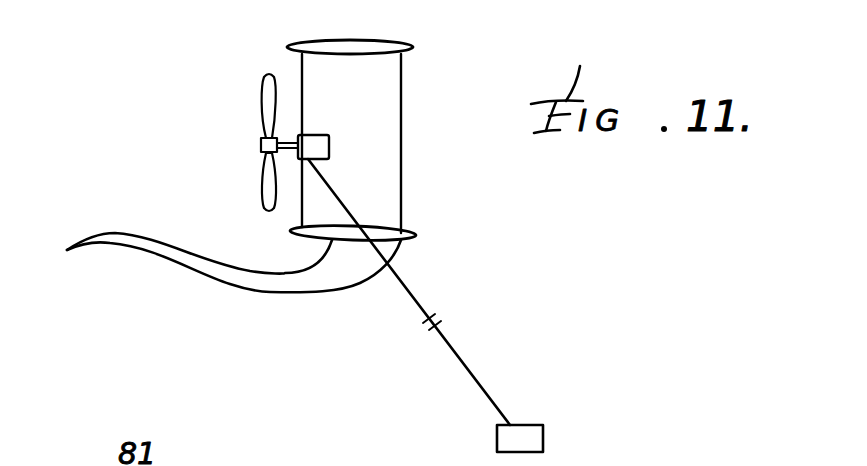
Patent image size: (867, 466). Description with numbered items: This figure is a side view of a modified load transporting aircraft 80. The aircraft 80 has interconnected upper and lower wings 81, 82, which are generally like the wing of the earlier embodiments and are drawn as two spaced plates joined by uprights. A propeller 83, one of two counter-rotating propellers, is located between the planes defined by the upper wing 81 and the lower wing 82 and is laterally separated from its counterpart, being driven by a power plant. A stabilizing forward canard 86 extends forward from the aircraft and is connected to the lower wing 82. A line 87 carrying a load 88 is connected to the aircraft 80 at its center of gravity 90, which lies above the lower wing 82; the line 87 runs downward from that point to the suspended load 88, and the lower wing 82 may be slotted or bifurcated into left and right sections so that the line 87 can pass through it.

The modified aircraft 80 is at (426, 109).
The upper wing 81 is at (369, 41).
The lower wing 82 is at (378, 225).
The propeller 83 is at (265, 98).
The stabilizing forward canard 86 is at (123, 237).
The line 87 is at (422, 301).
The load 88 is at (529, 434).
The center of gravity 90 is at (312, 160).